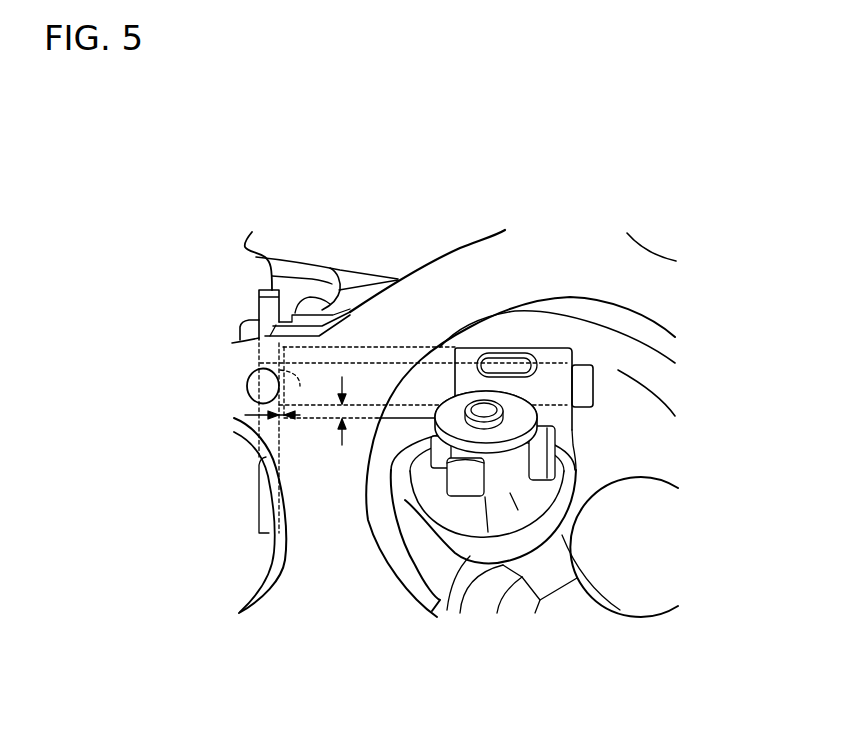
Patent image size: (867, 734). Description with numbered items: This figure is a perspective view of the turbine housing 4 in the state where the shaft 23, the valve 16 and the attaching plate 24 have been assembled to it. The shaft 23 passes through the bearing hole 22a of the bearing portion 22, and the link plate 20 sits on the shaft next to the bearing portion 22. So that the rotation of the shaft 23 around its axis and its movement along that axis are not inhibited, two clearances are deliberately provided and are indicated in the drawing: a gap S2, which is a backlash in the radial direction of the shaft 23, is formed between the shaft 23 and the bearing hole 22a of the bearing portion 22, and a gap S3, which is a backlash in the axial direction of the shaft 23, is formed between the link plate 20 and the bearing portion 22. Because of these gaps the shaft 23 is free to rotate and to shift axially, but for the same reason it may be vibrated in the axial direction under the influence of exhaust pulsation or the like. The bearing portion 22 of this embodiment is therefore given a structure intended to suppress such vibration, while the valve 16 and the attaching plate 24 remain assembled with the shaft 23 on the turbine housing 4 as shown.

The turbine housing 4 is at (455, 287).
The valve 16 is at (420, 465).
The link plate 20 is at (257, 304).
The bearing portion 22 is at (443, 337).
The bearing hole 22a is at (262, 388).
The shaft 23 is at (582, 383).
The attaching plate 24 is at (552, 350).
The gap in the radial direction S2 is at (357, 413).
The gap in the axial direction S3 is at (285, 418).